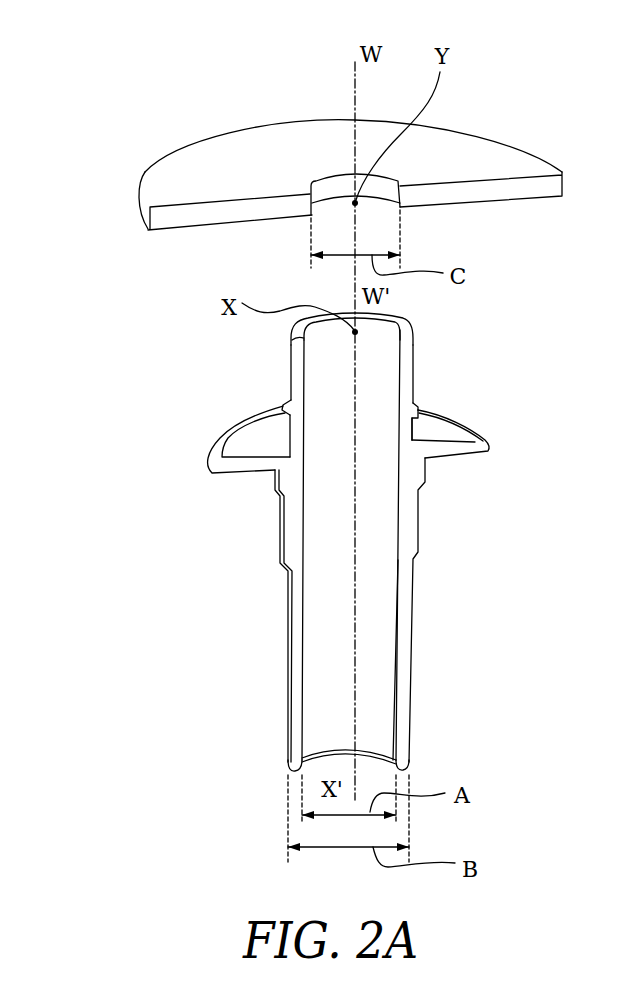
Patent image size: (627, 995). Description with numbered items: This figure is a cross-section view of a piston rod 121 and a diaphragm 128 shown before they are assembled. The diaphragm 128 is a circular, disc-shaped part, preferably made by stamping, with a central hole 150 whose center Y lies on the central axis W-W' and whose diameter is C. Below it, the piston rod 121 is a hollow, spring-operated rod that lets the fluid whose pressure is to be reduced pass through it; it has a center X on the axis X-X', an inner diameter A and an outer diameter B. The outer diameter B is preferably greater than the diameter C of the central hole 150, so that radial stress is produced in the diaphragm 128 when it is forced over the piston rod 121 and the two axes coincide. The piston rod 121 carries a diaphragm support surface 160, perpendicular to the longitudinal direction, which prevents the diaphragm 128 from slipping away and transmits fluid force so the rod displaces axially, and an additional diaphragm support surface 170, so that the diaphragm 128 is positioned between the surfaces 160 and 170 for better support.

The diaphragm 128 is at (463, 150).
The central hole 150 is at (327, 183).
The piston rod 121 is at (413, 615).
The diaphragm support surface 160 is at (468, 445).
The additional diaphragm support surface 170 is at (420, 410).